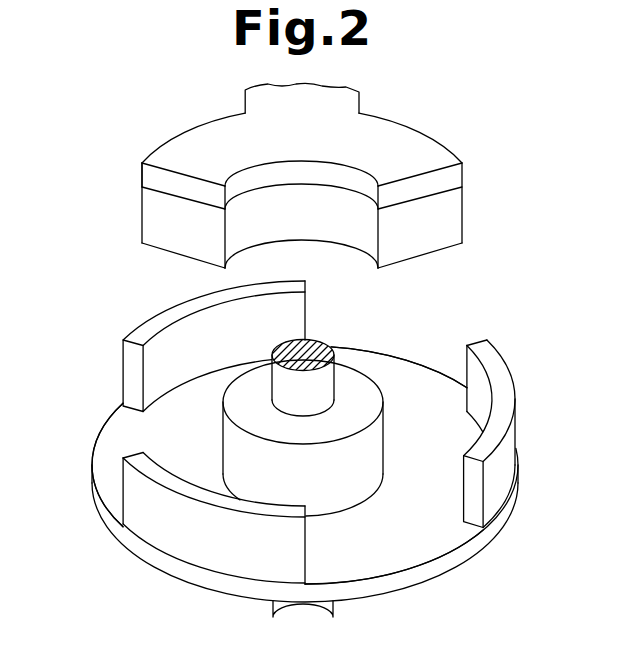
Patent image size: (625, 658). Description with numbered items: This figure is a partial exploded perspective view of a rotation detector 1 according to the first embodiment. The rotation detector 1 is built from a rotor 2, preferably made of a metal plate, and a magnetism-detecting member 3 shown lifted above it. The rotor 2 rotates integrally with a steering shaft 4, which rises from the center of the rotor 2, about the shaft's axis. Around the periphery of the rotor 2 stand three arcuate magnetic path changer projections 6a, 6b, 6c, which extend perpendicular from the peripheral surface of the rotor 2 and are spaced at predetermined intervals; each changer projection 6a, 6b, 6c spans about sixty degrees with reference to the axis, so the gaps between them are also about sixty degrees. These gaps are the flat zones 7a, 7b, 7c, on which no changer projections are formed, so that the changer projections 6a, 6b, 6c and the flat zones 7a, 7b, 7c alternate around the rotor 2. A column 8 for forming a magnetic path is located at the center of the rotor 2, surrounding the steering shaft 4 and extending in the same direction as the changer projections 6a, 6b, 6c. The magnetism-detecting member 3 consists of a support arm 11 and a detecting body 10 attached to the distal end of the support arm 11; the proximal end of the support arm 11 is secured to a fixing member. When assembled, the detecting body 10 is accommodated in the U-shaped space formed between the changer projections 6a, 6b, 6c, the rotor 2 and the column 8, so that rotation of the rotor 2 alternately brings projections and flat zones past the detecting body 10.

The rotation detector 1 is at (527, 296).
The rotor 2 is at (467, 552).
The magnetism-detecting member 3 is at (324, 193).
The steering shaft 4 is at (310, 343).
The magnetic path changer projection 6a is at (177, 311).
The magnetic path changer projection 6b is at (504, 395).
The magnetic path changer projection 6c is at (176, 486).
The flat zone 7a is at (425, 365).
The flat zone 7b is at (402, 563).
The flat zone 7c is at (103, 448).
The column 8 is at (380, 444).
The detecting body 10 is at (352, 247).
The support arm 11 is at (360, 99).